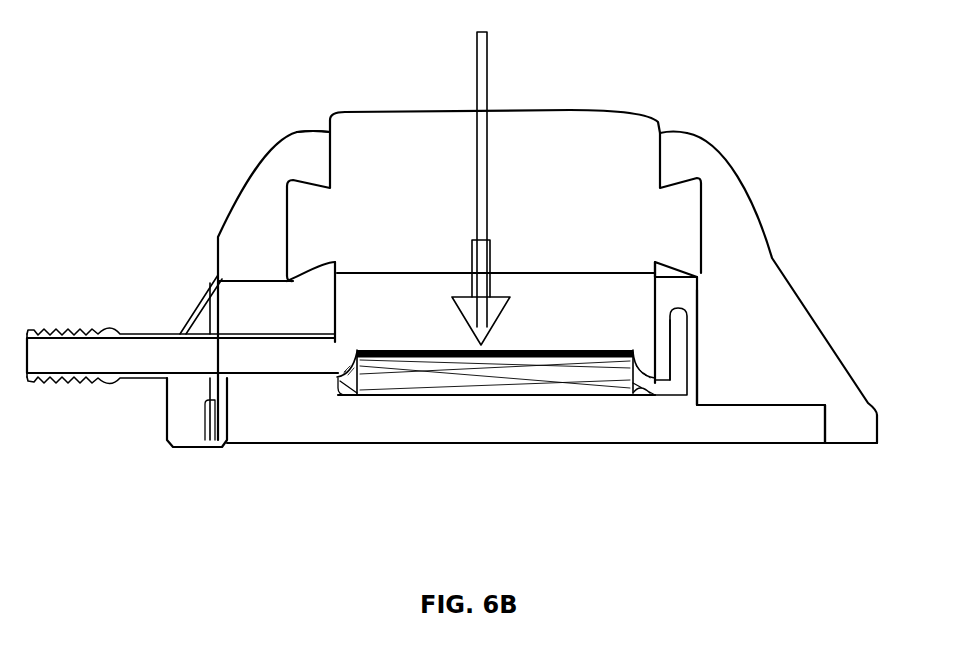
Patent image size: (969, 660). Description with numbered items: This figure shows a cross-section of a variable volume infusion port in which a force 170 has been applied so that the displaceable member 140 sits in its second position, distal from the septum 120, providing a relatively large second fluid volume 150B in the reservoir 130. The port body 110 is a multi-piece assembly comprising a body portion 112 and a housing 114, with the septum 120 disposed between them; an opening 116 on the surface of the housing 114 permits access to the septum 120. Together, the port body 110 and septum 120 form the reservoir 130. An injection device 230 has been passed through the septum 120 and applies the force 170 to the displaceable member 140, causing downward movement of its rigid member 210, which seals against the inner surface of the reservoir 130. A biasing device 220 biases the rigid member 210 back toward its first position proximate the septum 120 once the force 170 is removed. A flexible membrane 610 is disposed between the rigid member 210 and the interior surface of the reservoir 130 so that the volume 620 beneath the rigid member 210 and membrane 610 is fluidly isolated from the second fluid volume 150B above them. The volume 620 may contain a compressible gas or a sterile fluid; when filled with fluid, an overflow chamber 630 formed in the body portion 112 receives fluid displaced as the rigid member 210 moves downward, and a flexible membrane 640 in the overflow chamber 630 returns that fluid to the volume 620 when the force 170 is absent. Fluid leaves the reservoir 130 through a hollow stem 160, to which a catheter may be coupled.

The port body 110 is at (687, 133).
The body portion 112 is at (755, 433).
The housing 114 is at (788, 373).
The opening 116 is at (297, 132).
The septum 120 is at (496, 223).
The reservoir 130 is at (334, 303).
The displaceable member 140 is at (657, 334).
The second fluid volume 150B is at (634, 295).
The hollow stem 160 is at (118, 382).
The force 170 is at (491, 253).
The rigid member 210 is at (398, 347).
The biasing device 220 is at (462, 390).
The injection device 230 is at (488, 60).
The flexible membrane 610 is at (342, 393).
The volume 620 is at (579, 371).
The overflow chamber 630 is at (699, 296).
The flexible membrane 640 is at (680, 323).